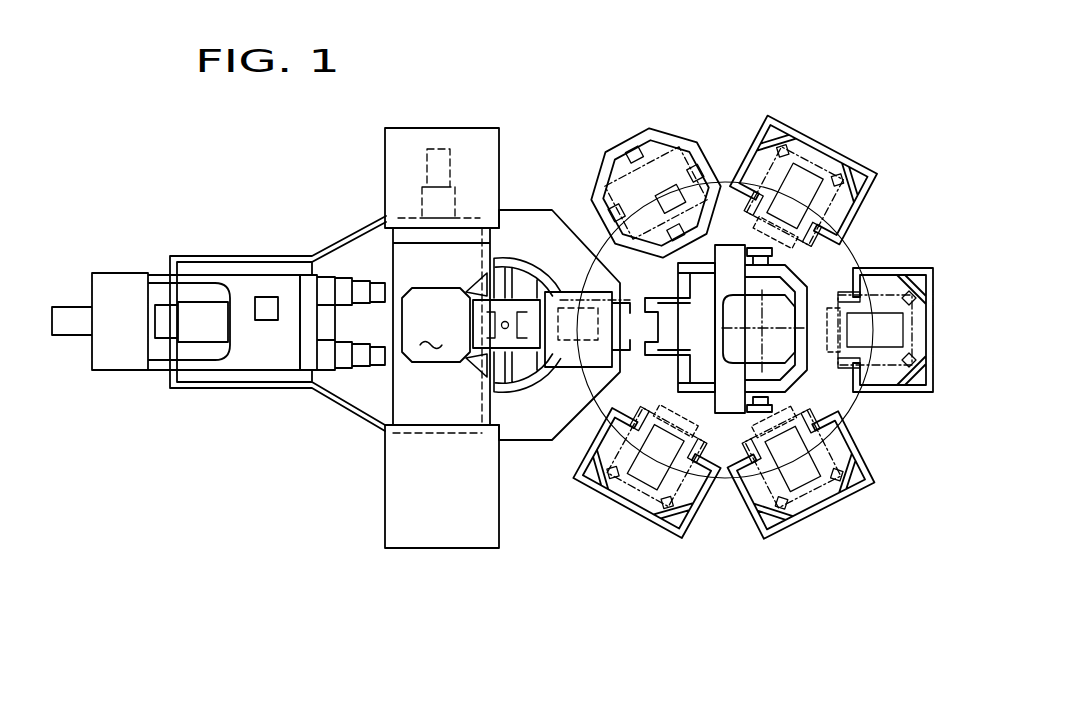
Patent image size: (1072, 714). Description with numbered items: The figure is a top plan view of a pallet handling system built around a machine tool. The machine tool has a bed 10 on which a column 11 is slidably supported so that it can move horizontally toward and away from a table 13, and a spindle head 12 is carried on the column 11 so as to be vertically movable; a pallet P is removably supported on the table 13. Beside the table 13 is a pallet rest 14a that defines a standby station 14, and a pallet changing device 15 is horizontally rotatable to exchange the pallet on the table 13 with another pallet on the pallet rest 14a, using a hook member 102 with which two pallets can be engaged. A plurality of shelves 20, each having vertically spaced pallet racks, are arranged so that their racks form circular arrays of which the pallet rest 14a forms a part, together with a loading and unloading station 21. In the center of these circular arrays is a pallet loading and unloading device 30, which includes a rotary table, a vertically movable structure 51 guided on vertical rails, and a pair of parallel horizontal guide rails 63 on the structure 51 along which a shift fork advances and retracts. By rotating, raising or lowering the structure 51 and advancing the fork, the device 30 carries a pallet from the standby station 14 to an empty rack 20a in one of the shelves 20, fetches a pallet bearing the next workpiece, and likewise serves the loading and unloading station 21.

The bed 10 is at (367, 397).
The column 11 is at (247, 363).
The spindle head 12 is at (312, 328).
The table 13 is at (418, 387).
The standby station 14 is at (570, 372).
The pallet rest 14a is at (563, 313).
The pallet changing device 15 is at (514, 360).
The hook member 102 is at (513, 307).
The shelves 20 is at (855, 162).
The rack 20a is at (857, 342).
The loading and unloading station 21 is at (677, 143).
The pallet loading and unloading device 30 is at (808, 278).
The vertically movable structure 51 is at (787, 385).
The guide rails 63 is at (667, 350).